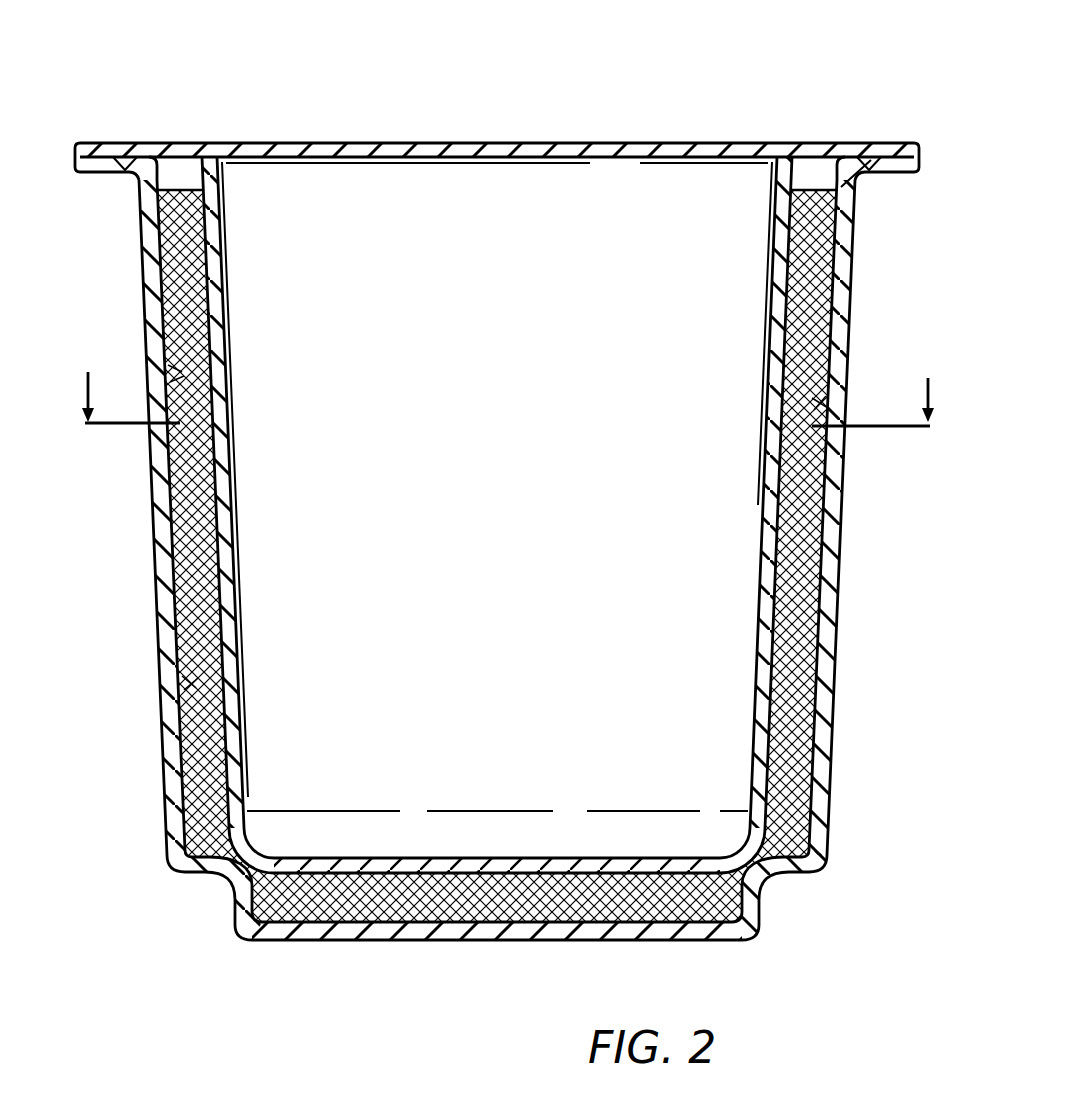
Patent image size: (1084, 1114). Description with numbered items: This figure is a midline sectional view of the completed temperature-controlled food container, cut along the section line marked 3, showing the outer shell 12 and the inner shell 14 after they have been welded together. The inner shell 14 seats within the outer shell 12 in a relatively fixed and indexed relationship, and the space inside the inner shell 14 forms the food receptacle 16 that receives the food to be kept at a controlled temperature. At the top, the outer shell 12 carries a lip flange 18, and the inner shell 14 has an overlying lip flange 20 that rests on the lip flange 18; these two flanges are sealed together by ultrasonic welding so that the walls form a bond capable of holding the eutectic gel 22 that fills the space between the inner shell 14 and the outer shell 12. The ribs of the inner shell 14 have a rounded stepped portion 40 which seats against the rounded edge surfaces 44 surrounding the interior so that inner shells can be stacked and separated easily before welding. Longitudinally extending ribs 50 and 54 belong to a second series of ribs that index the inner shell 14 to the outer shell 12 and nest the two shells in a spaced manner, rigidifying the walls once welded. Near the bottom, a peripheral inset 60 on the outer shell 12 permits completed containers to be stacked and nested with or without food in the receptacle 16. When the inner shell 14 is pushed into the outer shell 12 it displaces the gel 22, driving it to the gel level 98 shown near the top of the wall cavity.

The outer shell 12 is at (833, 653).
The inner shell 14 is at (762, 440).
The food receptacle 16 is at (528, 343).
The lip flange 18 is at (886, 188).
The lip flange 20 is at (130, 140).
The eutectic gel 22 is at (187, 683).
The stepped portion 40 is at (168, 287).
The rounded edge surfaces 44 is at (227, 147).
The longitudinally extending rib 50 is at (172, 375).
The longitudinally extending rib 54 is at (820, 403).
The peripheral inset 60 is at (208, 890).
The gel level 98 is at (813, 190).
The section line for FIG. 3 is at (504, 426).